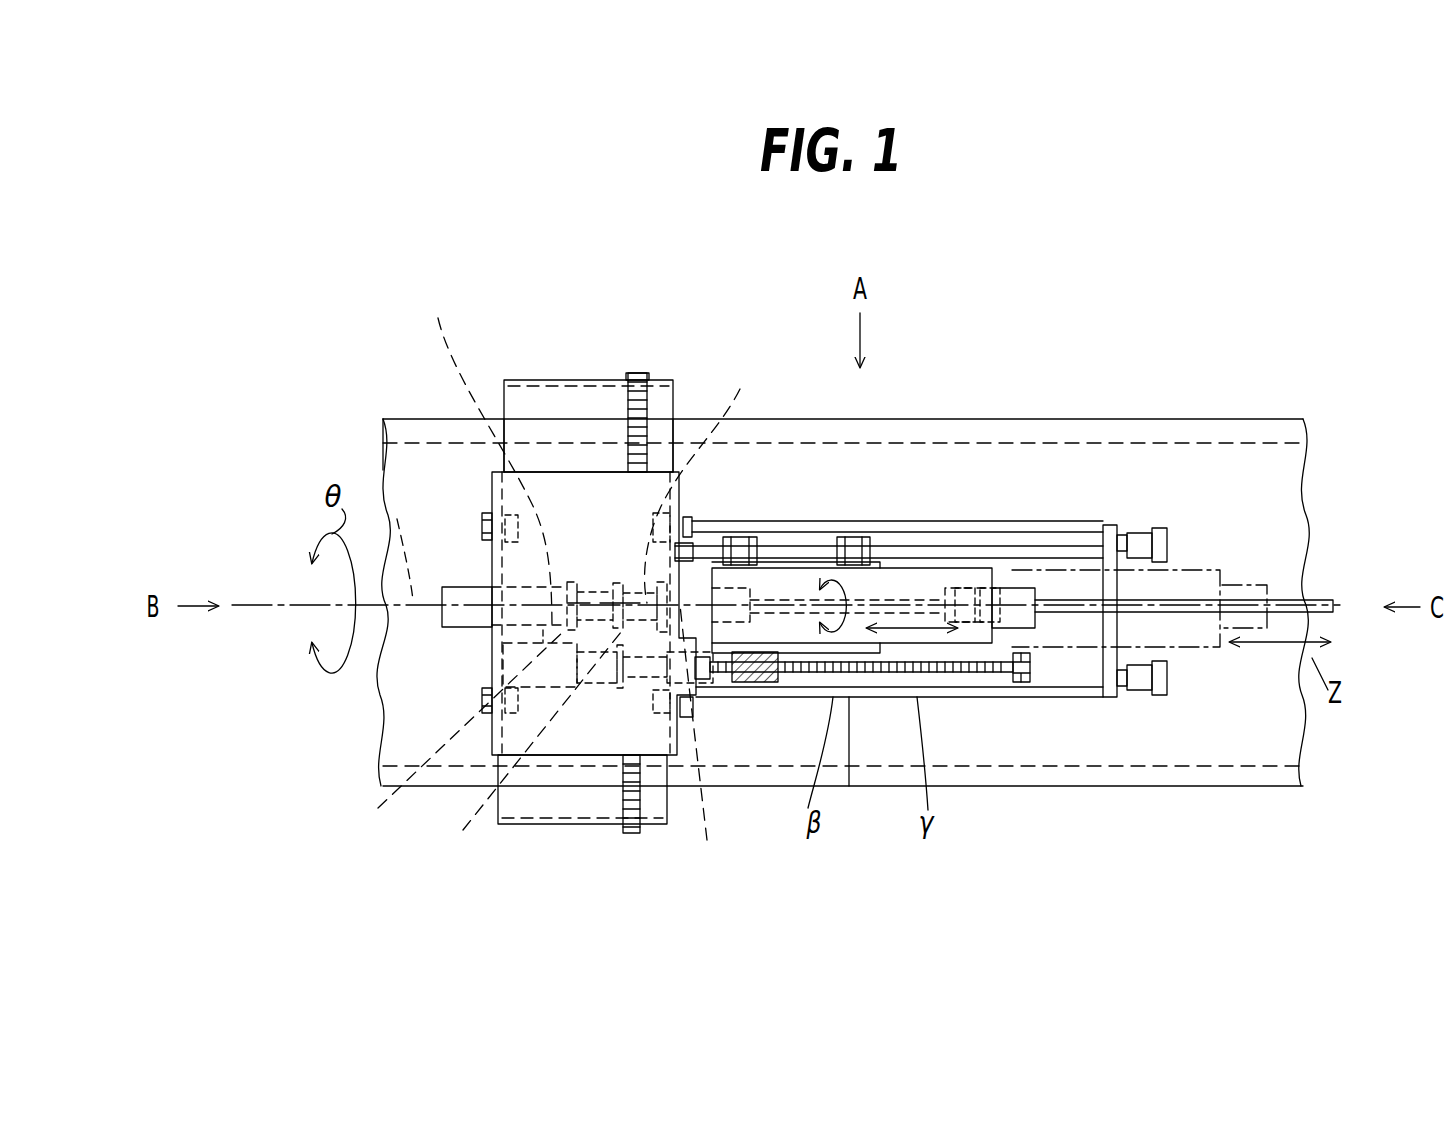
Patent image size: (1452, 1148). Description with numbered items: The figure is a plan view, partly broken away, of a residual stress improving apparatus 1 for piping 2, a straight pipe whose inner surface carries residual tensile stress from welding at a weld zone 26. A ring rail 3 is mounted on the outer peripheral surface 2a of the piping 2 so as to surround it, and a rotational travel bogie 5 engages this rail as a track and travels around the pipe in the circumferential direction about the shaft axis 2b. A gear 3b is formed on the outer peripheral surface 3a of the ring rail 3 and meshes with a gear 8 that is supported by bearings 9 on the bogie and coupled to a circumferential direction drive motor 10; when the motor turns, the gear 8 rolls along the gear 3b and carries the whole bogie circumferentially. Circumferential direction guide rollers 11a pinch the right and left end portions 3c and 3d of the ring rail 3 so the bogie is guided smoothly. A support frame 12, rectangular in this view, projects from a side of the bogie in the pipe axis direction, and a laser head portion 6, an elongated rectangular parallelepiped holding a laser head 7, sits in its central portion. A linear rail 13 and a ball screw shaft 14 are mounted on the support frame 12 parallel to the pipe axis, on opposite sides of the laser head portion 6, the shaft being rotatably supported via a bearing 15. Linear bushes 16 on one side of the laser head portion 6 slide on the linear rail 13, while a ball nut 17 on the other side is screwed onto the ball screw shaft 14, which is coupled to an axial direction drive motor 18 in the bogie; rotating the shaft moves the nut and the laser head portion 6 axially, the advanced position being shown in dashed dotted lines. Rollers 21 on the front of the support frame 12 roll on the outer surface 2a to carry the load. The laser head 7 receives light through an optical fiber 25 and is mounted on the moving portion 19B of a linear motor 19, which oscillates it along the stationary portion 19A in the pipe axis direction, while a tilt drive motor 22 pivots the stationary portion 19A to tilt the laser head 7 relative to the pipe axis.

The residual stress improving apparatus 1 is at (1087, 470).
The piping 2 is at (1016, 417).
The outer peripheral surface 2a is at (931, 419).
The shaft axis 2b is at (395, 517).
The ring rail 3 is at (555, 378).
The outer peripheral surface 3a is at (602, 400).
The gear 3b is at (637, 376).
The right end portion 3c is at (513, 406).
The left end portion 3d is at (663, 402).
The rotational travel bogie 5 is at (489, 490).
The laser head portion 6 is at (1000, 566).
The laser head 7 is at (1035, 590).
The gear 8 is at (696, 481).
The bearings 9 is at (535, 744).
The circumferential direction drive motor 10 is at (453, 627).
The circumferential direction guide rollers 11a is at (532, 738).
The support frame 12 is at (1110, 525).
The linear rail 13 is at (905, 546).
The ball screw shaft 14 is at (983, 697).
The bearing 15 is at (1010, 697).
The linear bushes 16 is at (853, 540).
The ball nut 17 is at (773, 697).
The axial direction drive motor 18 is at (488, 458).
The linear motor 19 is at (1062, 298).
The linear motor stationary portion 19A is at (962, 588).
The linear motor moving portion 19B is at (990, 588).
The rollers 21 is at (1161, 663).
The tilt drive motor 22 is at (742, 537).
The optical fiber 25 is at (1322, 602).
The weld zone 26 is at (850, 722).